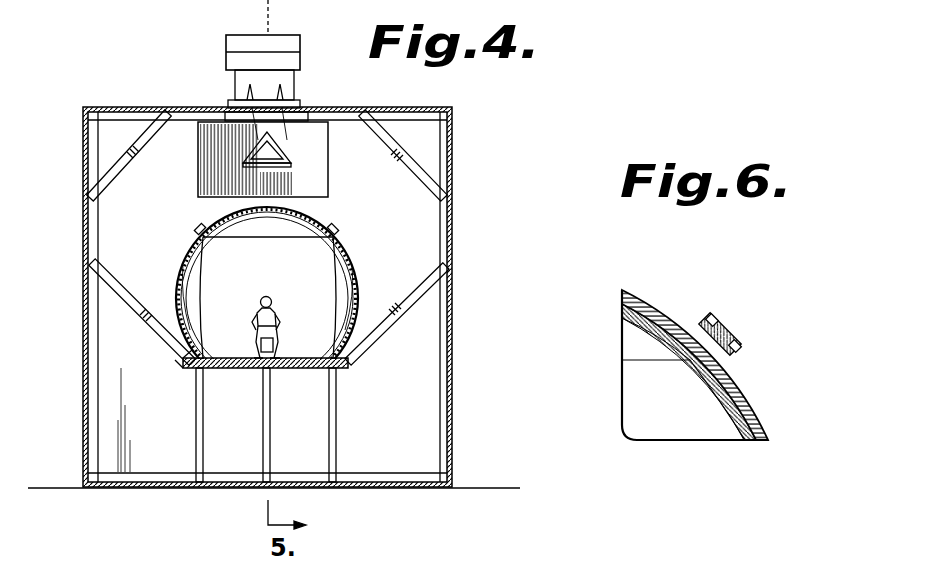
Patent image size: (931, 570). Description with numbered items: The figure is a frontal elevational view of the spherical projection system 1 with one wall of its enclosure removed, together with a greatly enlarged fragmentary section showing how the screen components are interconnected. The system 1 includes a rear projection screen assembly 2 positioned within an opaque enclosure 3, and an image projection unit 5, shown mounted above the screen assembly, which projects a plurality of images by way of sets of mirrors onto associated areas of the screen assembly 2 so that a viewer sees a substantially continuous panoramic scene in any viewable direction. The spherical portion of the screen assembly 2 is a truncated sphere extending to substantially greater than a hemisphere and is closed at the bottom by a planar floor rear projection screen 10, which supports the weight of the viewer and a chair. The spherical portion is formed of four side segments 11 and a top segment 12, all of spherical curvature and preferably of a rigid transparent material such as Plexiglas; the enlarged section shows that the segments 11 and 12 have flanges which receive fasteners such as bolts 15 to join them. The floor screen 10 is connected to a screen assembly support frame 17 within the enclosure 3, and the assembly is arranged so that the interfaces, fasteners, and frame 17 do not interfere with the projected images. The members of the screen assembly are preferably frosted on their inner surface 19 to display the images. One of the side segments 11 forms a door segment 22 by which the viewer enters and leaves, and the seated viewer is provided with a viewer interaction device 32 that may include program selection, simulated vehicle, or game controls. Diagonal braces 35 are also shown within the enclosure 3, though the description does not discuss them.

In FIG. 4, the spherical projection system 1 is at (190, 67).
In FIG. 4, the rear projection screen assembly 2 is at (215, 222).
In FIG. 4, the opaque enclosure 3 is at (458, 195).
In FIG. 4, the image projection unit 5 is at (303, 60).
In FIG. 4, the floor rear projection screen 10 is at (228, 358).
In FIG. 4, the side segments 11 is at (186, 265).
In FIG. 6, the side segments 11 is at (628, 410).
In FIG. 4, the top segment 12 is at (322, 226).
In FIG. 6, the top segment 12 is at (640, 300).
In FIG. 6, the bolts 15 is at (716, 318).
In FIG. 4, the screen assembly support frame 17 is at (188, 404).
In FIG. 4, the inner surface 19 is at (362, 299).
In FIG. 6, the inner surface 19 is at (742, 440).
In FIG. 4, the door segment 22 is at (267, 298).
In FIG. 4, the viewer interaction device 32 is at (279, 330).
In FIG. 4, the diagonal brace 35 is at (243, 146).